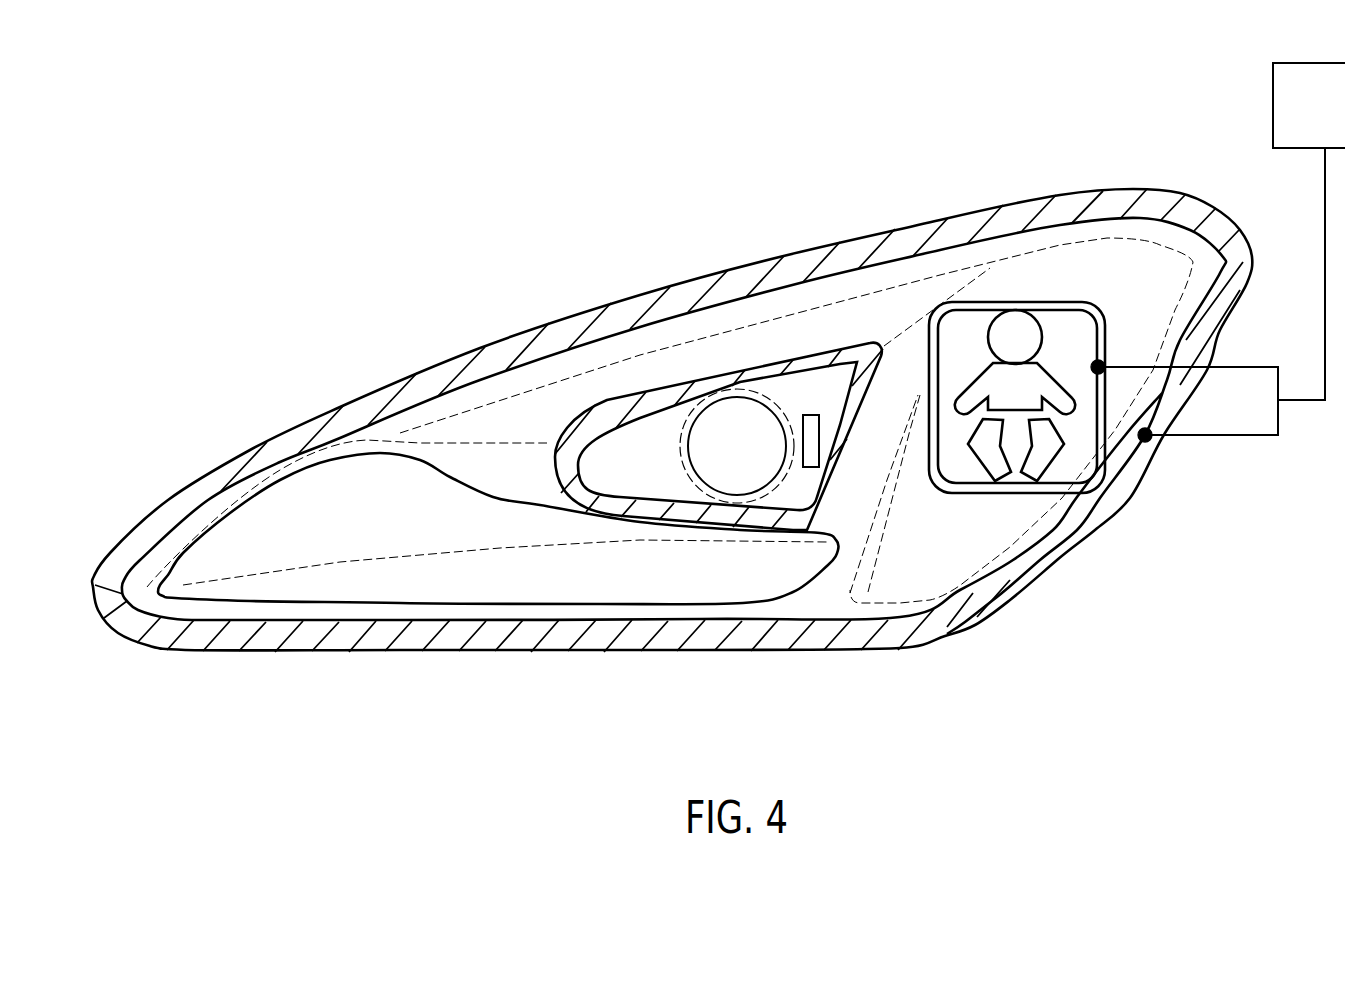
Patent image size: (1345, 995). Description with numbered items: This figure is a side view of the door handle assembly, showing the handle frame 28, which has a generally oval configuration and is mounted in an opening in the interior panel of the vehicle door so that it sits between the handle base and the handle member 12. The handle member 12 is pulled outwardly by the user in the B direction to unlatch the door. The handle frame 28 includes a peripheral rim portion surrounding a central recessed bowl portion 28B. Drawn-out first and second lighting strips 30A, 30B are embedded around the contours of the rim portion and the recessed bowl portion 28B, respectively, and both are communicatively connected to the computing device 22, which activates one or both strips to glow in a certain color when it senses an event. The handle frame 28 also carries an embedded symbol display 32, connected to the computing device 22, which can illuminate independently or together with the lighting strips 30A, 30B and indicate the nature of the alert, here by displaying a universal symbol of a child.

The handle member 12 is at (500, 515).
The computing device 22 is at (1218, 252).
The handle frame 28 is at (940, 586).
The recessed bowl portion 28B is at (845, 338).
The first lighting strip 30A is at (1137, 487).
The second lighting strip 30B is at (738, 382).
The symbol display 32 is at (1017, 298).
The direction B is at (735, 572).